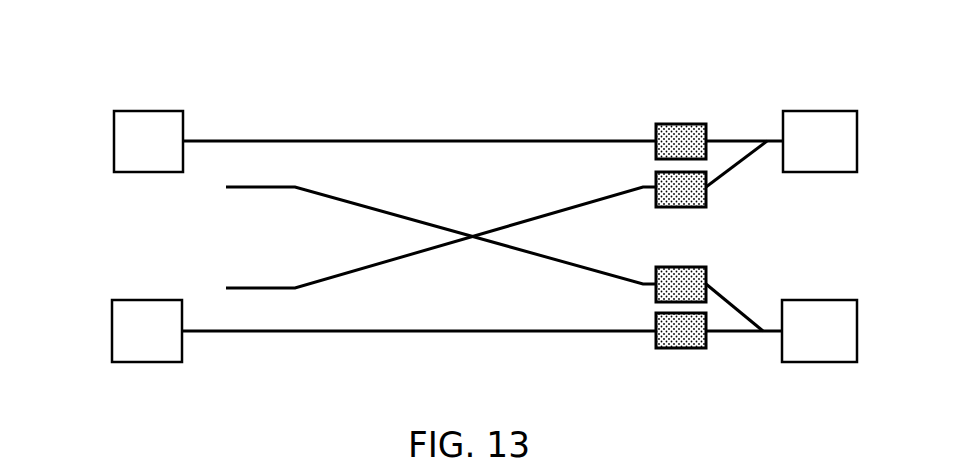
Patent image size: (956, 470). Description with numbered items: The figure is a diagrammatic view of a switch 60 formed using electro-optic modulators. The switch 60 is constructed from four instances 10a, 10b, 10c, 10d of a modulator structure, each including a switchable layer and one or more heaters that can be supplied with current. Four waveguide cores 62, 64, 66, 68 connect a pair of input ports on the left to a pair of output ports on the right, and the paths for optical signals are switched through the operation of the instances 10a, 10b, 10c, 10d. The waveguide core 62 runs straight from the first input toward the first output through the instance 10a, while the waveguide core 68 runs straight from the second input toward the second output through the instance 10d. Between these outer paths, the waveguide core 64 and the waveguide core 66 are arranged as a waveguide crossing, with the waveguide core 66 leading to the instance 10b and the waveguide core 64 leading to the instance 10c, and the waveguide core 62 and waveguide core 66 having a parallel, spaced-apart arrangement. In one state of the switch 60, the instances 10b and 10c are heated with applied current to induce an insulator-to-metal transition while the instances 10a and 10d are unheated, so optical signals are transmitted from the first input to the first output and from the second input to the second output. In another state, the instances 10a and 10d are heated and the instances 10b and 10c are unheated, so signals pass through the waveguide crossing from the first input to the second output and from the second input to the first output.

The switch 60 is at (152, 71).
The waveguide core 62 is at (300, 141).
The waveguide core 64 is at (377, 207).
The waveguide core 66 is at (353, 270).
The waveguide core 68 is at (478, 330).
The instance of the structure 10a is at (672, 142).
The instance of the structure 10b is at (685, 192).
The instance of the structure 10c is at (690, 282).
The instance of the structure 10d is at (658, 333).